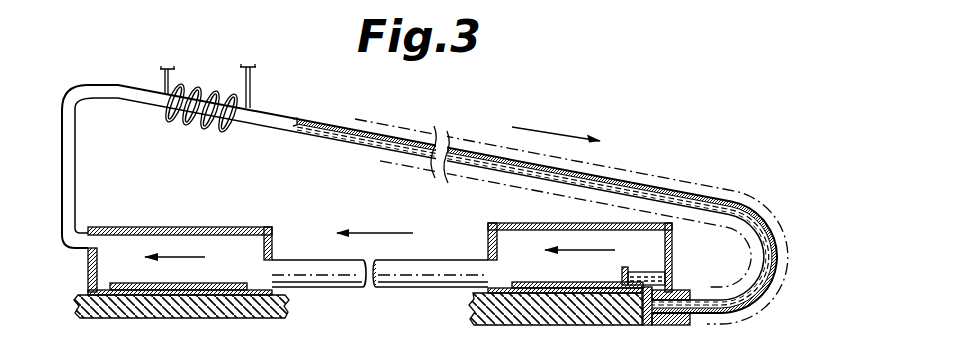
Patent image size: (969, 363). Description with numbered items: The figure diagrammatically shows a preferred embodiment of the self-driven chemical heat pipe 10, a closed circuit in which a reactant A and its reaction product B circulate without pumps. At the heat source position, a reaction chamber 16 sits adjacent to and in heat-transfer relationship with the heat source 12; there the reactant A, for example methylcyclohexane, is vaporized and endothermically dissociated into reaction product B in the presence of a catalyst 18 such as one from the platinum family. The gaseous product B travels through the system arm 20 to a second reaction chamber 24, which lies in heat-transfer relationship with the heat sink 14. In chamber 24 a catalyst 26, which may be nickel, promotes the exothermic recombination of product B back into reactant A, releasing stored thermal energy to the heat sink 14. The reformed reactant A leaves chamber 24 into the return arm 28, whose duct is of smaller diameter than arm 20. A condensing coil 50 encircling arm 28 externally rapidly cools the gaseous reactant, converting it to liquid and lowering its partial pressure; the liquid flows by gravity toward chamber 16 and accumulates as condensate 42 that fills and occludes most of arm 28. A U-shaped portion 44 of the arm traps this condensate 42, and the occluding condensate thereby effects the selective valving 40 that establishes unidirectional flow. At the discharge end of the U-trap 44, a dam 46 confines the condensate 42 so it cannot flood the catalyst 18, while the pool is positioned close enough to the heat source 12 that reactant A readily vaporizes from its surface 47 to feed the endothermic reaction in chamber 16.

The self-driven chemical heat pipe system 10 is at (535, 98).
The heat source 12 is at (551, 315).
The heat sink 14 is at (165, 303).
The reaction chamber 16 is at (506, 233).
The catalyst 18 is at (528, 276).
The system arm 20 is at (385, 283).
The reaction chamber 24 is at (193, 243).
The catalyst 26 is at (135, 285).
The return arm 28 is at (622, 178).
The selective valving 40 is at (742, 192).
The condensate 42 is at (673, 207).
The U-shaped portion (U-trap) 44 is at (700, 325).
The dam 46 is at (608, 280).
The surface of condensate pool 47 is at (648, 272).
The condensing coil 50 is at (252, 82).